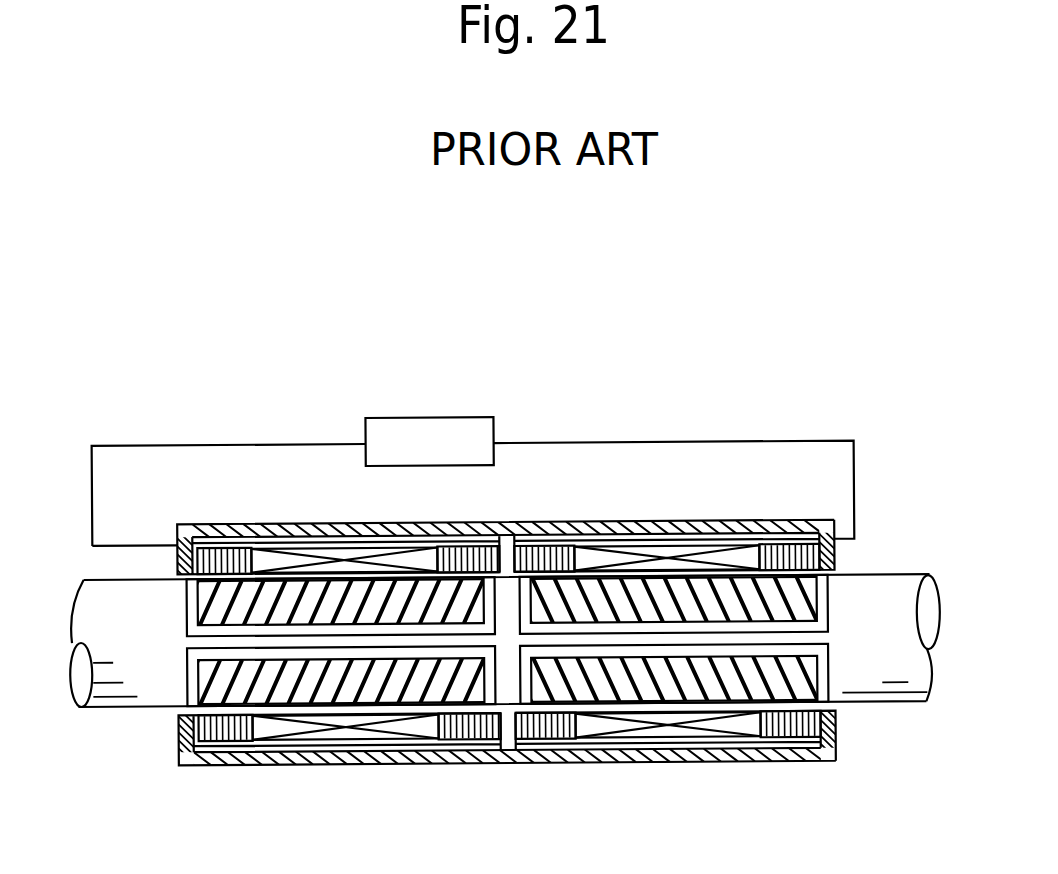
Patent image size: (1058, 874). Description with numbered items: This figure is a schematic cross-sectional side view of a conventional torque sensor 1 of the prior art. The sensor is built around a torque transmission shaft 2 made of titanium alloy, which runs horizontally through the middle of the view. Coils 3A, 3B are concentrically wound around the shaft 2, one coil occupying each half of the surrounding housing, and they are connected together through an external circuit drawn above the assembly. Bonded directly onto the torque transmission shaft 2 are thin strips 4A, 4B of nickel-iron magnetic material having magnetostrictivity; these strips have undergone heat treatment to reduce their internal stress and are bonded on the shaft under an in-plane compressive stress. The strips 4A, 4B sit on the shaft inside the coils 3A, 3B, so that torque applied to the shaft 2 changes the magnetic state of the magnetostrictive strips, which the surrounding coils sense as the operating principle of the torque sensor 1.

The torque sensor 1 is at (504, 559).
The torque transmission shaft 2 is at (873, 676).
The coil 3A is at (586, 556).
The coil 3B is at (272, 562).
The thin strip 4A is at (192, 685).
The thin strip 4B is at (822, 702).